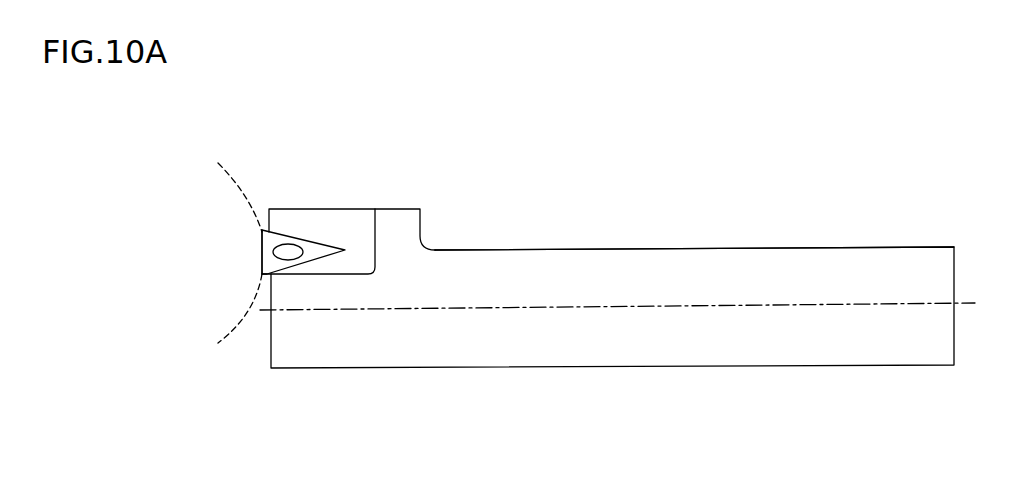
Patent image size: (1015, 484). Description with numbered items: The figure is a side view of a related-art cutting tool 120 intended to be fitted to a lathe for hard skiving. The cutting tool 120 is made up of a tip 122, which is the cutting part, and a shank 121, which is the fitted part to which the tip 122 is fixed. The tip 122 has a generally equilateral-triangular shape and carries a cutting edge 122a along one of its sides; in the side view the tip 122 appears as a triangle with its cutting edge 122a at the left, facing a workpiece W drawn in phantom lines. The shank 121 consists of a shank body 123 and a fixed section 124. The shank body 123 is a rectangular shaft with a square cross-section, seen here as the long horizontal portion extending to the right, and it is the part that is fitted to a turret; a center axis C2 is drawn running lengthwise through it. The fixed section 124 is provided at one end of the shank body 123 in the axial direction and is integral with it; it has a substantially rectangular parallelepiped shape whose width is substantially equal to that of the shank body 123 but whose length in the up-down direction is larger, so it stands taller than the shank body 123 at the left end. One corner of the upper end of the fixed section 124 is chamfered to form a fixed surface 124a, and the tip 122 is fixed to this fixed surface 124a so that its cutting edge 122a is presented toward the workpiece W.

The cutting tool 120 is at (583, 197).
The shank 121 is at (507, 250).
The tip 122 is at (279, 237).
The cutting edge 122a is at (262, 233).
The shank body 123 is at (738, 247).
The fixed section 124 is at (355, 208).
The fixed surface 124a is at (321, 225).
The center axis of tool C2 is at (808, 303).
The workpiece W is at (235, 325).